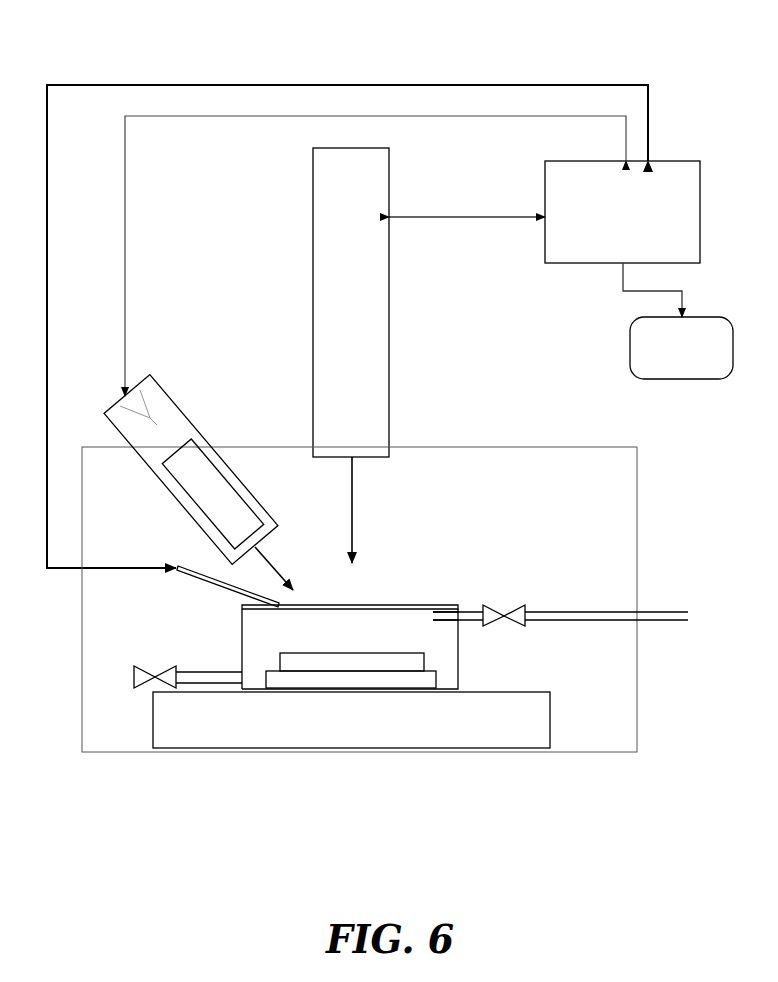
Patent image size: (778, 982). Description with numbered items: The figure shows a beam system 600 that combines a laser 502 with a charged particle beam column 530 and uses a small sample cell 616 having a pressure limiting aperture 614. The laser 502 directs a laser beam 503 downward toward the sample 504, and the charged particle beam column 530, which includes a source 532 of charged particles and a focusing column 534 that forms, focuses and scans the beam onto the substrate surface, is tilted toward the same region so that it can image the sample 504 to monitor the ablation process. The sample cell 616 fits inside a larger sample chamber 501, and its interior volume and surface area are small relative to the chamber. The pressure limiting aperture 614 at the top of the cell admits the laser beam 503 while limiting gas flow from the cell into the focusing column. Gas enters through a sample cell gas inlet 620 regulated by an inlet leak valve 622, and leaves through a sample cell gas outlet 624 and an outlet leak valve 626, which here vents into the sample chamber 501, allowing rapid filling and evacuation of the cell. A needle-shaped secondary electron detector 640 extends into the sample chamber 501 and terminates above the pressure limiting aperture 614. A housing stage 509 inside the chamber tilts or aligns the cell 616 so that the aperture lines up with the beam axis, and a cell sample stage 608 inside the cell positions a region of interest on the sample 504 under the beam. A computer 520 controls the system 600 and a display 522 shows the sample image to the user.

The system 600 is at (148, 57).
The computer 520 is at (686, 161).
The display 522 is at (696, 317).
The laser 502 is at (389, 335).
The laser beam 503 is at (352, 475).
The sample chamber 501 is at (628, 532).
The charged particle beam column 530 is at (188, 417).
The source of charged particles 532 is at (143, 400).
The focusing column 534 is at (193, 520).
The secondary electron detector 640 is at (230, 592).
The pressure limiting aperture 614 is at (352, 604).
The sample cell 616 is at (443, 605).
The sample cell gas inlet 620 is at (463, 610).
The inlet leak valve 622 is at (508, 612).
The sample cell gas outlet 624 is at (189, 672).
The outlet leak valve 626 is at (153, 683).
The housing stage 509 is at (547, 697).
The cell sample stage 608 is at (432, 676).
The sample 504 is at (292, 662).